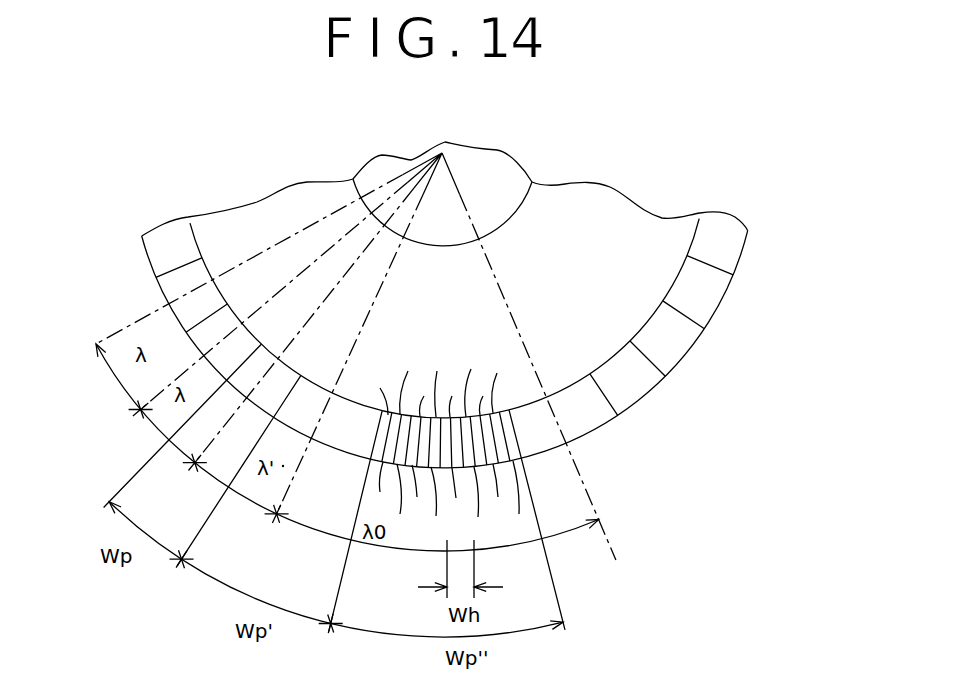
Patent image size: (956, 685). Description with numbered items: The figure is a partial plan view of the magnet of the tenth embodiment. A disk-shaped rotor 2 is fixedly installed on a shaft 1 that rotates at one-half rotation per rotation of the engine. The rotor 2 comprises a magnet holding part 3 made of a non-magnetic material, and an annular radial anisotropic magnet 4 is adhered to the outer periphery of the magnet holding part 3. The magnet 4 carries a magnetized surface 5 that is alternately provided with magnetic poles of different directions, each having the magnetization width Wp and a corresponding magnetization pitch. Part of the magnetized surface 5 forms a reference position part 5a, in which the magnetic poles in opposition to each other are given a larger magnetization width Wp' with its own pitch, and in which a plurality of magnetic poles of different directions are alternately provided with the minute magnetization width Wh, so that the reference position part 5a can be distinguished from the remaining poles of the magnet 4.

The shaft 1 is at (497, 149).
The rotor 2 is at (305, 195).
The magnet holding part 3 is at (613, 185).
The magnet 4 is at (723, 223).
The magnetized surface 5 is at (730, 280).
The reference position part 5a is at (390, 550).